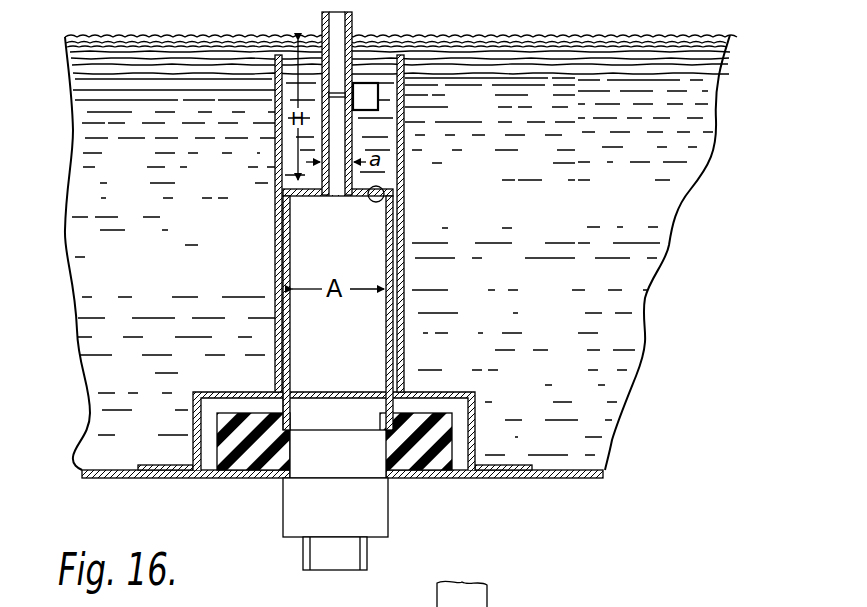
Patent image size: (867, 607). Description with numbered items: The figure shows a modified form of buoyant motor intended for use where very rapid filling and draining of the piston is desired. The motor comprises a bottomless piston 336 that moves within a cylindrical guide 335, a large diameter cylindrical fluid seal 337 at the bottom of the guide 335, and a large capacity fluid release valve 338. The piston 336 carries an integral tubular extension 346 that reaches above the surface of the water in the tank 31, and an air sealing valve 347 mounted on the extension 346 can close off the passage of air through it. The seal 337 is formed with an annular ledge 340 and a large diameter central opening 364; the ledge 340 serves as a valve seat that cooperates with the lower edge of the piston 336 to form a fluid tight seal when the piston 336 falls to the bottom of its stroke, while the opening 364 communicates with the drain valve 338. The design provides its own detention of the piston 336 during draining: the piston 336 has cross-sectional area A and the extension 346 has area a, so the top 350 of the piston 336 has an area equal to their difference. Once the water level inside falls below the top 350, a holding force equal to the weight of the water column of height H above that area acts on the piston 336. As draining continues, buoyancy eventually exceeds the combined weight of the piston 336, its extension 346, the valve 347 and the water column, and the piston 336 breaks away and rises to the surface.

The liquid tank 31 is at (521, 277).
The cylindrical guide 335 is at (275, 179).
The bottomless piston 336 is at (283, 250).
The cylindrical fluid seal 337 is at (444, 437).
The fluid release valve 338 is at (384, 508).
The annular ledge 340 is at (292, 431).
The tubular extension 346 is at (352, 23).
The air sealing valve 347 is at (374, 96).
The top of the piston 350 is at (384, 203).
The central opening 364 is at (292, 456).